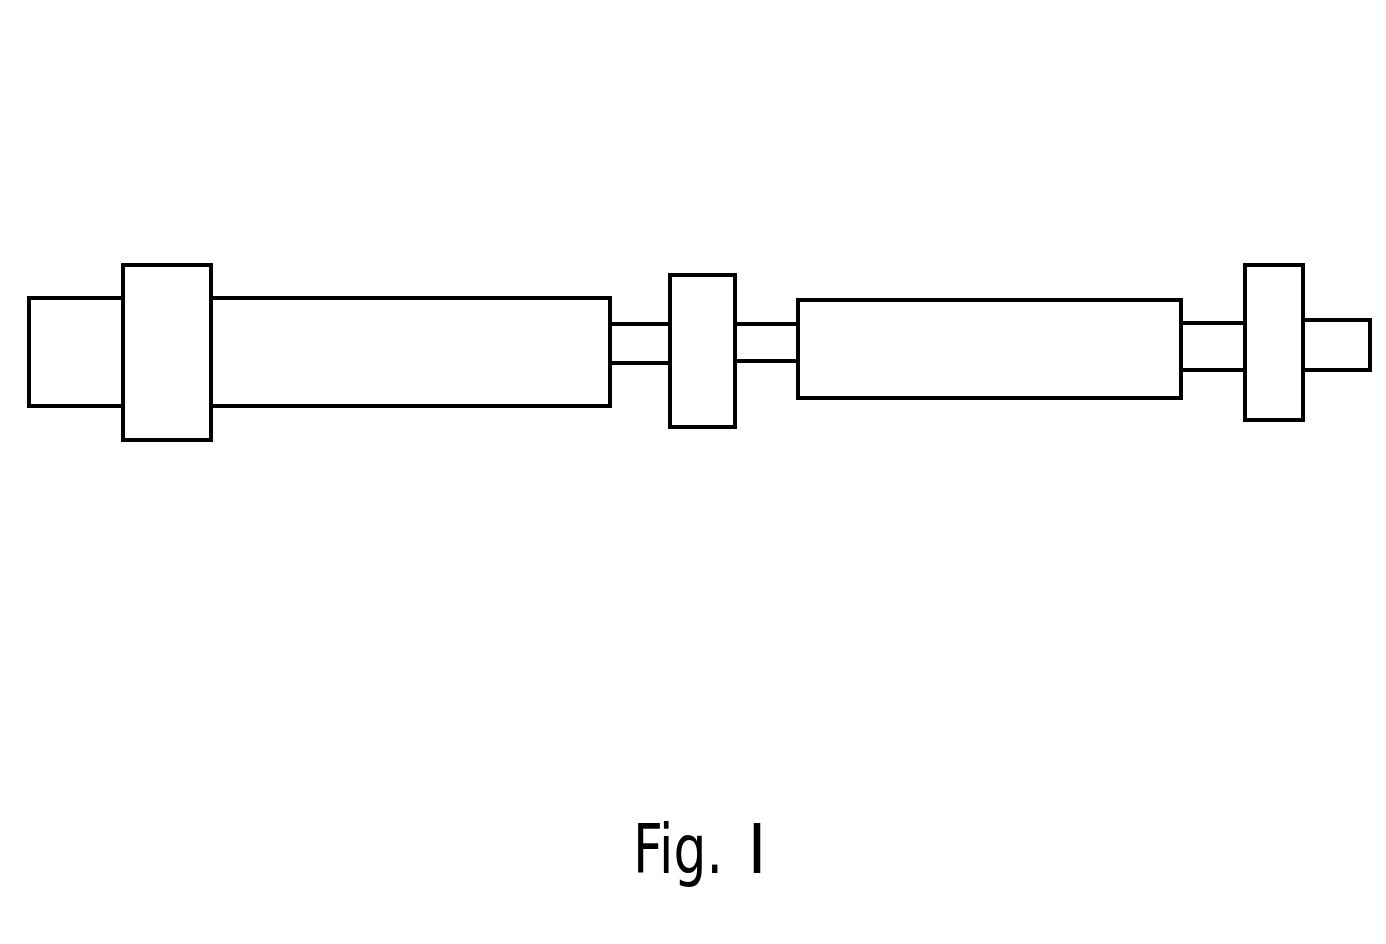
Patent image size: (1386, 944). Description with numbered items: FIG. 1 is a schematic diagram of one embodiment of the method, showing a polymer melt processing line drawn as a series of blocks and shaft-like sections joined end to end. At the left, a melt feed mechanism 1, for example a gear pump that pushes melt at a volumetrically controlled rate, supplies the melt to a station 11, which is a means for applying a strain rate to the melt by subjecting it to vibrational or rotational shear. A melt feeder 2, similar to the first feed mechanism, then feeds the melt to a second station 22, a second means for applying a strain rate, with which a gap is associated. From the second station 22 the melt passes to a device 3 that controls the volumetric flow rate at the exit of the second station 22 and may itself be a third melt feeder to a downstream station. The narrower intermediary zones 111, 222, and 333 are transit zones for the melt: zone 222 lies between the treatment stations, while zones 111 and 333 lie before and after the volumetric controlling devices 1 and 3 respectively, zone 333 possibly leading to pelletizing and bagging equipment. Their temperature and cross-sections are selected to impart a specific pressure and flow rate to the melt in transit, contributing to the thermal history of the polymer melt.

The melt feed mechanism 1 is at (170, 390).
The station 11 is at (372, 346).
The intermediary zone 111 is at (75, 322).
The melt feeder 2 is at (702, 400).
The second station 22 is at (1036, 346).
The intermediary zone 222 is at (767, 337).
The device 3 is at (1273, 393).
The intermediary zone 333 is at (1337, 345).